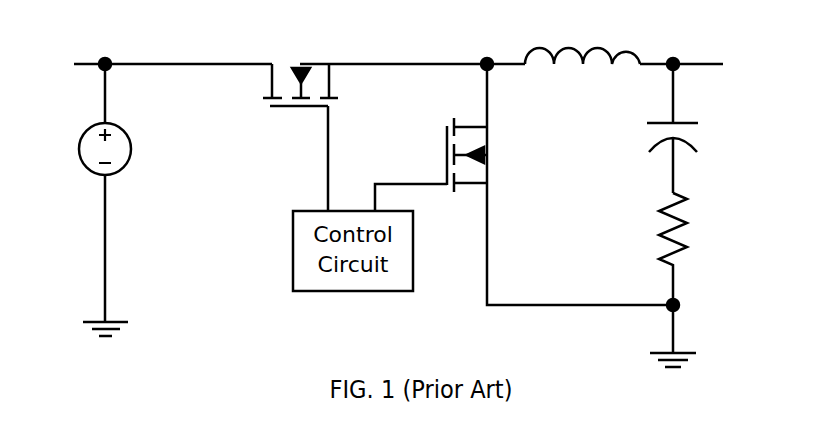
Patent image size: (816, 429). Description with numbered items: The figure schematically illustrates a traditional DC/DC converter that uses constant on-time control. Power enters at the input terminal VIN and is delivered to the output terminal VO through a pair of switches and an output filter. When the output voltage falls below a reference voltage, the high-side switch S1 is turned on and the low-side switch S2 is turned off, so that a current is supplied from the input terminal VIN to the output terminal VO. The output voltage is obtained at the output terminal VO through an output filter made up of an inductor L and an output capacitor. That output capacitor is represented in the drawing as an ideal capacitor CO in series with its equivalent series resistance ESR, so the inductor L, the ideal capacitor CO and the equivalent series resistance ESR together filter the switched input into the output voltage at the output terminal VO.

The input terminal VIN is at (105, 185).
The high-side switch S1 is at (300, 102).
The low-side switch S2 is at (450, 155).
The inductor L is at (582, 46).
The output terminal VO is at (674, 53).
The ideal capacitor CO is at (652, 128).
The equivalent series resistance ESR is at (644, 249).